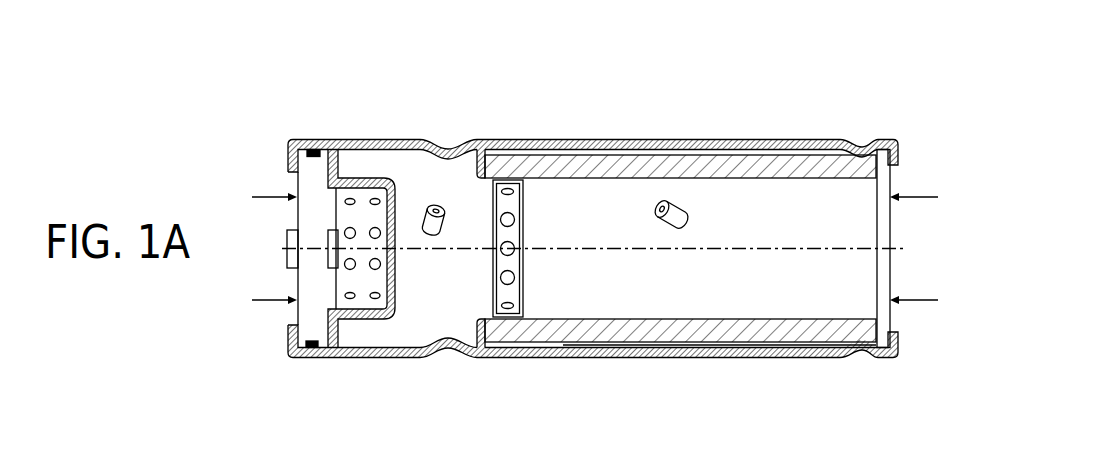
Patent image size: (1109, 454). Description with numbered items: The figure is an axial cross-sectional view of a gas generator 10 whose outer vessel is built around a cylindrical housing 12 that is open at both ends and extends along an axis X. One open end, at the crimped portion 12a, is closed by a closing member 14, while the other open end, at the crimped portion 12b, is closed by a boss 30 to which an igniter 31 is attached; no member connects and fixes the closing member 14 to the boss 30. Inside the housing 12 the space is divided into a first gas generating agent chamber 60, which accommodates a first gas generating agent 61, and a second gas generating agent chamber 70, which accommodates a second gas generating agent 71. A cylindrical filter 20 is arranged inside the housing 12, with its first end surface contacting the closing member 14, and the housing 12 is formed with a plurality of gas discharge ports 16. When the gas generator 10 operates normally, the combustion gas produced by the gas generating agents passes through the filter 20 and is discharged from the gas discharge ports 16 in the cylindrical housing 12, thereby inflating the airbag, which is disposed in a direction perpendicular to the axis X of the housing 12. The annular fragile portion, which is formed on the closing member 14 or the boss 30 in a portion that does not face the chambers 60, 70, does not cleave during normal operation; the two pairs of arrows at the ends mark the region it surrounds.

The gas generator 10 is at (638, 104).
The cylindrical housing 12 is at (771, 138).
The crimped portion 12a is at (899, 152).
The crimped portion 12b is at (289, 344).
The closing member 14 is at (887, 219).
The gas discharge port 16 is at (667, 360).
The cylindrical filter 20 is at (808, 343).
The boss 30 is at (311, 278).
The igniter 31 is at (287, 238).
The first gas generating agent chamber 60 is at (482, 200).
The first gas generating agent 61 is at (446, 230).
The second gas generating agent chamber 70 is at (632, 294).
The second gas generating agent 71 is at (684, 203).
The axis X is at (923, 249).